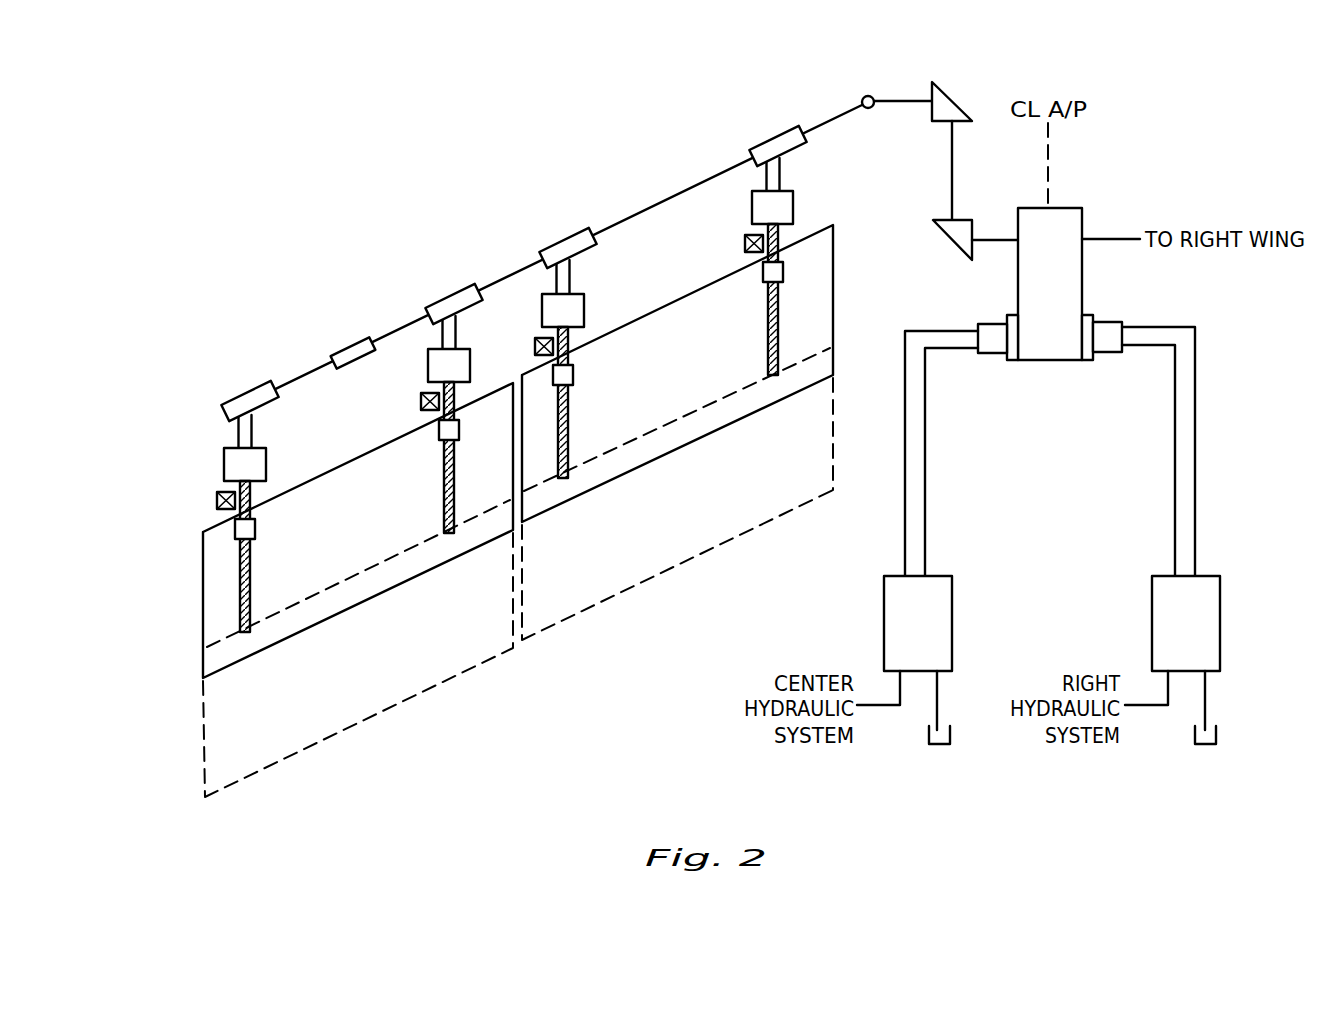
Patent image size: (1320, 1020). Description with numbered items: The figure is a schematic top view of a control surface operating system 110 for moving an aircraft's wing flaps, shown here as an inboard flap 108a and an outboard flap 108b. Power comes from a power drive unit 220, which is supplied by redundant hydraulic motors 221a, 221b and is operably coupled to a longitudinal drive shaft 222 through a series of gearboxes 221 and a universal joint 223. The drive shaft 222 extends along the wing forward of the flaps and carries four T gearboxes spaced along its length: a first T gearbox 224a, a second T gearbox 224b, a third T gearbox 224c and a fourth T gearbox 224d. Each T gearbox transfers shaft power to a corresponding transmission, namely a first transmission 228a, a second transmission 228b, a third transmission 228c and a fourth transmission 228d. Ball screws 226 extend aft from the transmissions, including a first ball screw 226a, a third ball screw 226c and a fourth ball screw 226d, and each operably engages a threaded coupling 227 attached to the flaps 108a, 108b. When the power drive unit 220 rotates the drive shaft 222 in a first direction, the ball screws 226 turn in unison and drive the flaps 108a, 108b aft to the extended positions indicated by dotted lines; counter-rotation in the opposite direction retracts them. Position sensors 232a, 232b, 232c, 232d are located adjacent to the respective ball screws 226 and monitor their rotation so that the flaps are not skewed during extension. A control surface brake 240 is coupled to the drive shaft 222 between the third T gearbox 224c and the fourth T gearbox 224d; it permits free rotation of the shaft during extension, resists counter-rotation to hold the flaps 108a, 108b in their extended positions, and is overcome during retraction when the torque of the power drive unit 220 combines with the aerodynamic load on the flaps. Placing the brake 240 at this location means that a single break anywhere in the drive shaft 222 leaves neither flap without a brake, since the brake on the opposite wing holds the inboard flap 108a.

The control surface operating system 110 is at (407, 158).
The inboard flap 108a is at (833, 322).
The outboard flap 108b is at (203, 662).
The power drive unit 220 is at (1082, 288).
The gearboxes 221 is at (962, 125).
The hydraulic motor 221a is at (973, 357).
The hydraulic motor 221b is at (1078, 357).
The drive shaft 222 is at (697, 184).
The universal joint 223 is at (862, 98).
The first T gearbox 224a is at (775, 132).
The second T gearbox 224b is at (567, 237).
The third T gearbox 224c is at (460, 290).
The fourth T gearbox 224d is at (243, 398).
The ball screws 226 is at (570, 422).
The first ball screw 226a is at (767, 327).
The third ball screw 226c is at (445, 482).
The fourth ball screw 226d is at (240, 577).
The threaded coupling 227 is at (783, 272).
The first transmission 228a is at (795, 206).
The second transmission 228b is at (543, 305).
The third transmission 228c is at (426, 357).
The fourth transmission 228d is at (267, 460).
The position sensor 232a is at (745, 243).
The position sensor 232b is at (534, 347).
The position sensor 232c is at (421, 400).
The position sensor 232d is at (217, 498).
The control surface brake 240 is at (350, 350).